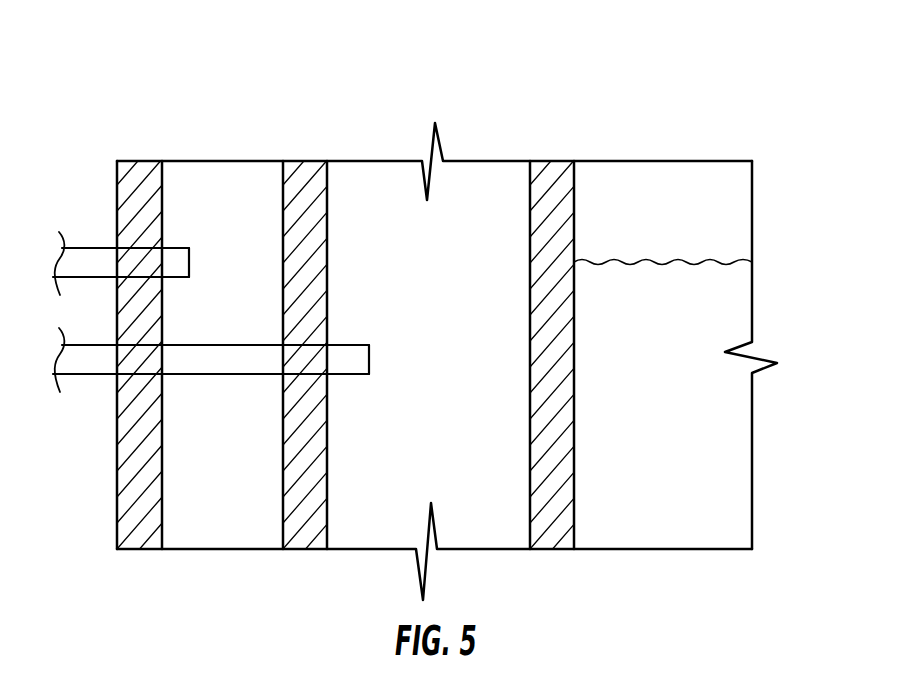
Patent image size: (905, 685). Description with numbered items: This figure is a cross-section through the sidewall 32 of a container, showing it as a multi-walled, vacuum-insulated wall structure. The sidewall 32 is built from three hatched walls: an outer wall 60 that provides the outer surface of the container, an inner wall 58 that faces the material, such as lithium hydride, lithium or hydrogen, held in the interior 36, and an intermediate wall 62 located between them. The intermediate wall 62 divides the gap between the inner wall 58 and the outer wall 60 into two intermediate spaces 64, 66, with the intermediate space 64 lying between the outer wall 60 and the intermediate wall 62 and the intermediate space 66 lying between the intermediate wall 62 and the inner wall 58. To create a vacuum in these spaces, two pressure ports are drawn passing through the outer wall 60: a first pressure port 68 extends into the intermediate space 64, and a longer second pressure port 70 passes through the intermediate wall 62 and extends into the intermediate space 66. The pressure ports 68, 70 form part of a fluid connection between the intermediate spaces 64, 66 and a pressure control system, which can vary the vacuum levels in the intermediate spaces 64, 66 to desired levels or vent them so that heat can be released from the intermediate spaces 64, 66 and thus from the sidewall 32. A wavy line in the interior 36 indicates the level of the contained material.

The sidewall 32 is at (806, 51).
The interior 36 is at (738, 222).
The inner wall 58 is at (602, 128).
The outer wall 60 is at (174, 128).
The intermediate wall 62 is at (358, 128).
The intermediate space 64 is at (243, 585).
The intermediate space 66 is at (490, 581).
The first pressure port 68 is at (226, 223).
The second pressure port 70 is at (410, 313).